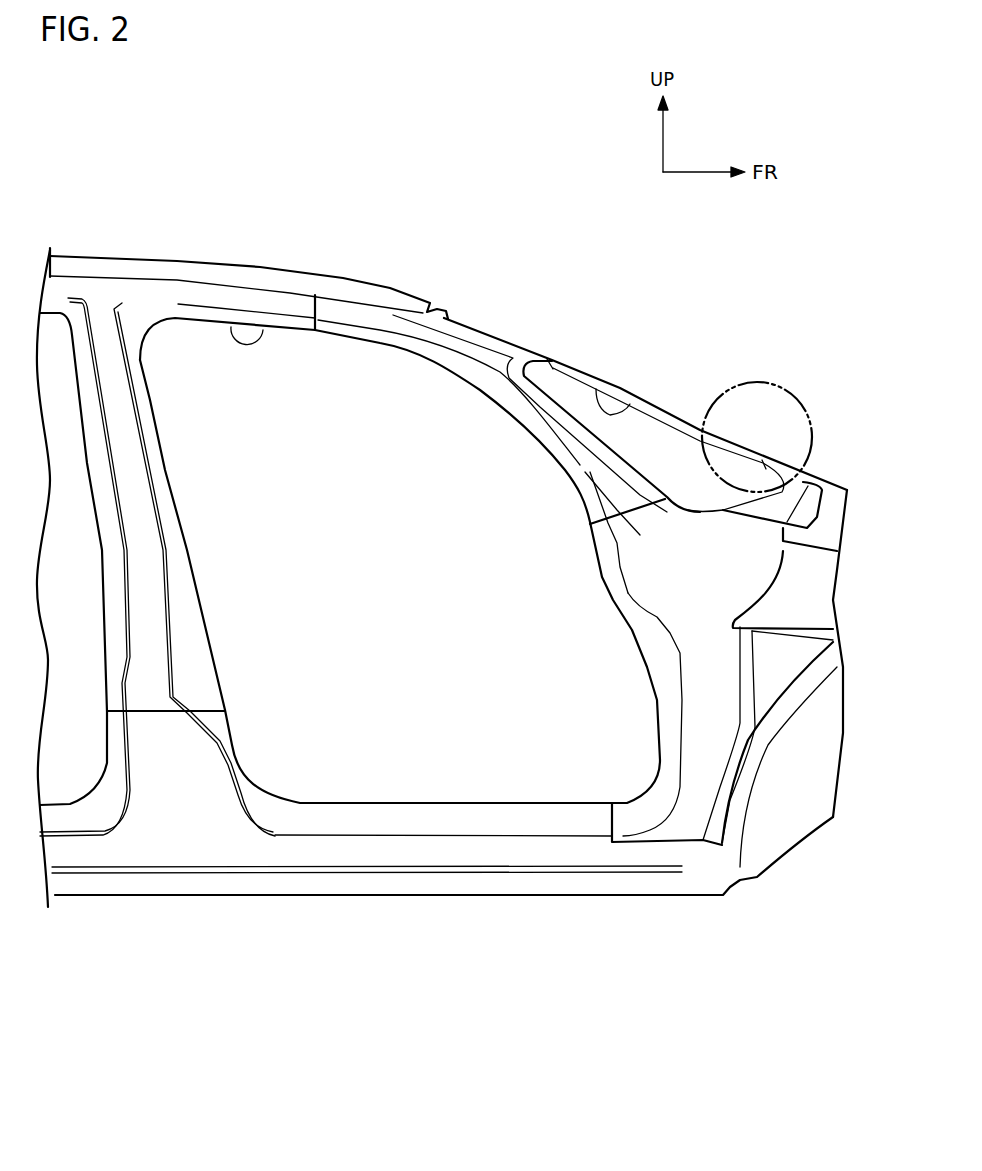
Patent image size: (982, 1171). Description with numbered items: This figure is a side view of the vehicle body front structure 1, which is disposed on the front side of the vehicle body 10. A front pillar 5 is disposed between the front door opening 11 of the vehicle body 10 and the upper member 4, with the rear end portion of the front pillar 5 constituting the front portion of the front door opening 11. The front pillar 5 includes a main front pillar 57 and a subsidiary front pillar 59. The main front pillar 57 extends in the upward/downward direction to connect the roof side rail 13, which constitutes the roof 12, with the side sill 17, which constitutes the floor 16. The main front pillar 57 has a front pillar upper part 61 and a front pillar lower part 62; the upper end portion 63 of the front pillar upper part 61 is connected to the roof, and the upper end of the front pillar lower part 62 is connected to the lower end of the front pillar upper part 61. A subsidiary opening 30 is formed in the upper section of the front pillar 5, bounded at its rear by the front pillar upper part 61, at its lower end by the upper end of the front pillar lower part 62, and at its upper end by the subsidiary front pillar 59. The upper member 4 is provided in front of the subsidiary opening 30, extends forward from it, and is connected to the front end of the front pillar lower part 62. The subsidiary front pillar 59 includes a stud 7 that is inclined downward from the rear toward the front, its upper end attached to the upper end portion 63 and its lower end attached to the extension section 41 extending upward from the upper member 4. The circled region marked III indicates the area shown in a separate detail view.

The vehicle body front structure 1 is at (677, 348).
The upper member 4 is at (820, 575).
The front pillar 5 is at (496, 320).
The stud 7 is at (663, 410).
The vehicle body 10 is at (354, 243).
The front door opening 11 is at (233, 327).
The roof 12 is at (101, 254).
The roof side rail 13 is at (180, 302).
The floor 16 is at (278, 896).
The side sill 17 is at (372, 858).
The subsidiary opening 30 is at (598, 391).
The extension section 41 is at (808, 487).
The main front pillar 57 is at (587, 543).
The subsidiary front pillar 59 is at (626, 365).
The front pillar upper part 61 is at (513, 399).
The front pillar lower part 62 is at (667, 597).
The upper end portion 63 is at (482, 343).
The section III indicator III is at (790, 390).